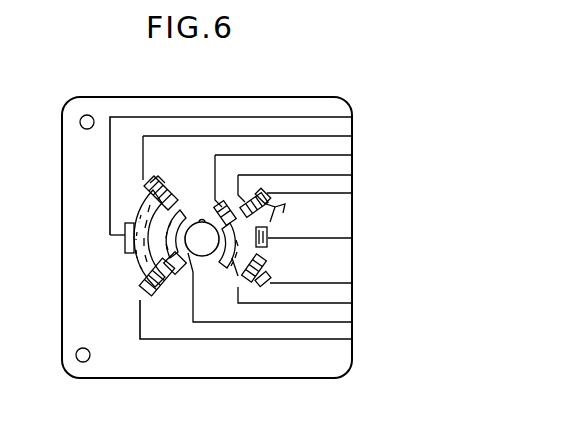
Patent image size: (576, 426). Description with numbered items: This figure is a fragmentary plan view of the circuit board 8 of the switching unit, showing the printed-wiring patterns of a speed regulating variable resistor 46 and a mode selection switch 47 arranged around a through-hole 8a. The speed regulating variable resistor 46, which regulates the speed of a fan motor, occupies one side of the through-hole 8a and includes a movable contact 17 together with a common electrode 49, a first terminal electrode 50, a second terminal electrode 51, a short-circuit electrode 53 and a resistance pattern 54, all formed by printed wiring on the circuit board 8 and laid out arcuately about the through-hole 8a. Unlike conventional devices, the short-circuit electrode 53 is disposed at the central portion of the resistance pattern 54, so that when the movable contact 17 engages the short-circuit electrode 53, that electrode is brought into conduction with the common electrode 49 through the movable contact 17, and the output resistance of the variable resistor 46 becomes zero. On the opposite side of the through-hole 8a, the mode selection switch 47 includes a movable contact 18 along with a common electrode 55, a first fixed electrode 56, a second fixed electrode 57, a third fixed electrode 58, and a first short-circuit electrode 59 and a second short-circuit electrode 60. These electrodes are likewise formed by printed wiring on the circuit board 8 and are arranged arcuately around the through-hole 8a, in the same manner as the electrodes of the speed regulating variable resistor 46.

The circuit board 8 is at (136, 108).
The through-hole 8a is at (203, 220).
The movable contact 17 is at (143, 268).
The movable contact 18 is at (281, 210).
The speed regulating variable resistor 46 is at (121, 257).
The mode selection switch 47 is at (221, 283).
The common electrode 49 is at (185, 204).
The first terminal electrode 50 is at (157, 178).
The second terminal electrode 51 is at (150, 291).
The short-circuit electrode 53 is at (125, 246).
The resistance pattern 54 is at (150, 202).
The common electrode 55 is at (225, 203).
The first fixed electrode 56 is at (258, 196).
The second fixed electrode 57 is at (270, 247).
The third fixed electrode 58 is at (251, 278).
The first short-circuit electrode 59 is at (278, 200).
The second short-circuit electrode 60 is at (271, 279).